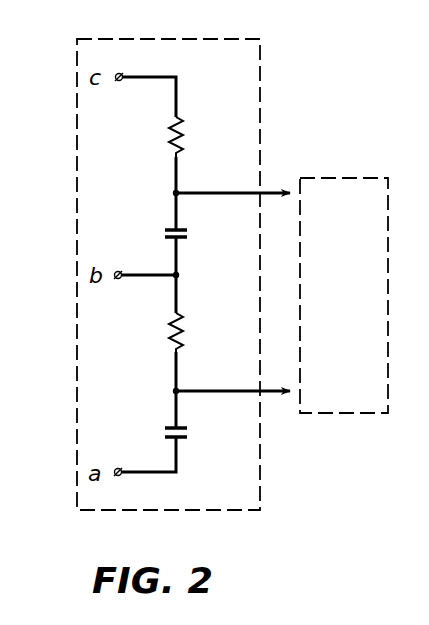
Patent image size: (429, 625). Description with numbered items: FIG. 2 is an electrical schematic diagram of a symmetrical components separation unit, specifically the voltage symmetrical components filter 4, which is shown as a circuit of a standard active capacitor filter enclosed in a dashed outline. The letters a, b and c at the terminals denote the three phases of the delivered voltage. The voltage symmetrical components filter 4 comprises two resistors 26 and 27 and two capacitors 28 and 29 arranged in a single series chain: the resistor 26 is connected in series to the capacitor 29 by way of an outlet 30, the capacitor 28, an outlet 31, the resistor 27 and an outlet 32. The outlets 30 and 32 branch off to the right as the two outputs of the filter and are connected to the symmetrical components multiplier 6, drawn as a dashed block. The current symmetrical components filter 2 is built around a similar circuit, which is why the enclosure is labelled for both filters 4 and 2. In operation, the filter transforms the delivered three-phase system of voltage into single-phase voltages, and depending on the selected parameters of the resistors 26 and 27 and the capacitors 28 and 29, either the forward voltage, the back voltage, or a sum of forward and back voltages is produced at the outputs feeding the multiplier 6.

The current symmetrical components filter 2 is at (168, 255).
The voltage symmetrical components filter 4 is at (178, 38).
The symmetrical components multiplier 6 is at (352, 175).
The resistor 26 is at (184, 136).
The resistor 27 is at (184, 334).
The capacitor 28 is at (188, 233).
The capacitor 29 is at (188, 432).
The outlet 30 is at (175, 191).
The outlet 31 is at (180, 273).
The outlet 32 is at (172, 391).